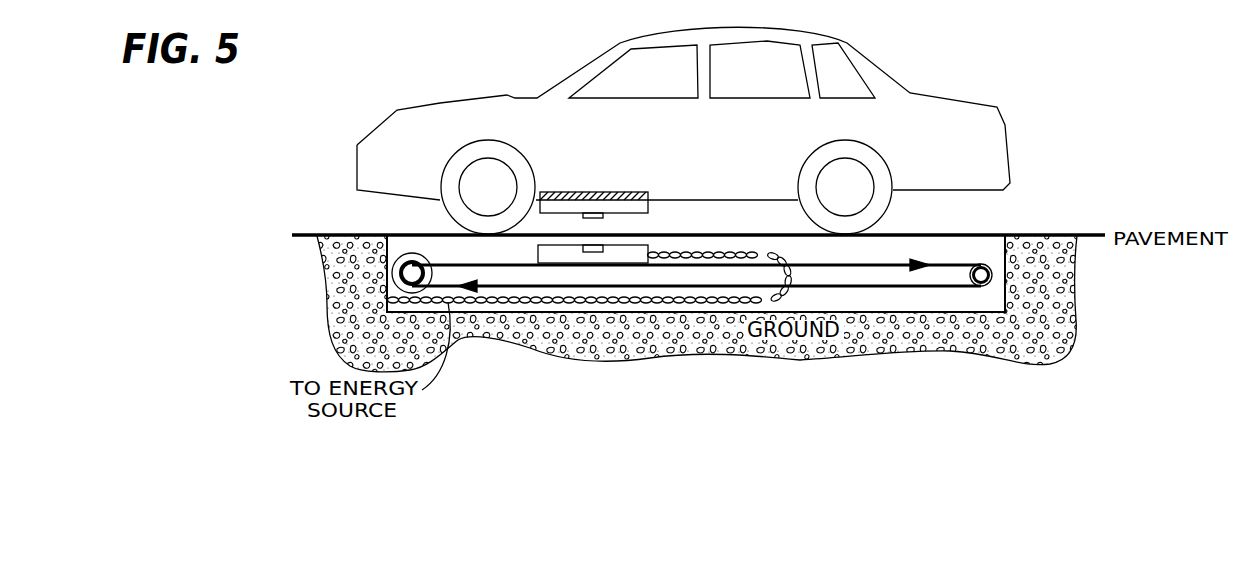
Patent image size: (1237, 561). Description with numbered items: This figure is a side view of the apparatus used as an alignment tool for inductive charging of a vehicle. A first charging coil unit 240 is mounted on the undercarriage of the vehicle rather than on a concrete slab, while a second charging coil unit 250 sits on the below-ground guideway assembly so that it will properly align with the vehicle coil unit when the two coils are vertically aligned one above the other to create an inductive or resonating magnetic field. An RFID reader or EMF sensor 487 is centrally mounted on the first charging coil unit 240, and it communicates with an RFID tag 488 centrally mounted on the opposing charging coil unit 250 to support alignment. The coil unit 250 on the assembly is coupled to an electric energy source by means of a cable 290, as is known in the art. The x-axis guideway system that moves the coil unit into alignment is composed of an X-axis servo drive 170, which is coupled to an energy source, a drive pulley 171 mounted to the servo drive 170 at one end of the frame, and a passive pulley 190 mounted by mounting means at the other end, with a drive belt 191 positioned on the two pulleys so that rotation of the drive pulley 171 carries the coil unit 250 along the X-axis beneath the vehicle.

The X-axis servo drive 170 is at (405, 283).
The drive pulley 171 is at (410, 274).
The passive pulley 190 is at (988, 275).
The conveyor belt 191 is at (848, 288).
The first charging coil unit 240 is at (635, 208).
The second charging coil unit 250 is at (557, 253).
The cable 290 is at (650, 300).
The RFID reader or EMF sensor 487 is at (588, 213).
The RFID tag 488 is at (593, 252).